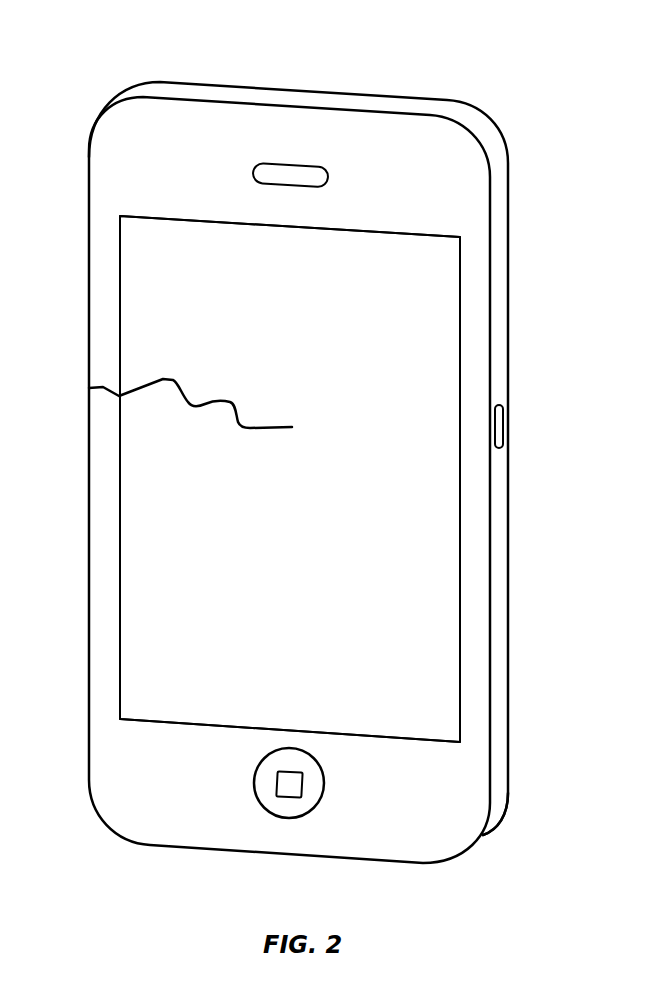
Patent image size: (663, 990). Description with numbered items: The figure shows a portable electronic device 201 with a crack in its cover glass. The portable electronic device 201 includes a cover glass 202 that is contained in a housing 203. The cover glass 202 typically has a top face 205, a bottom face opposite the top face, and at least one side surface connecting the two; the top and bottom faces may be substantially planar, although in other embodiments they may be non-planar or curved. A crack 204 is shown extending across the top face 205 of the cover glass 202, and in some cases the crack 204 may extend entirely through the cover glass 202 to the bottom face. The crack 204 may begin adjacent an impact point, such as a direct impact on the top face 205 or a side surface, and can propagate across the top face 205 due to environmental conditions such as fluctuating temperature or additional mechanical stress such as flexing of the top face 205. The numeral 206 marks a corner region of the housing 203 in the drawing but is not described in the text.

The portable electronic device 201 is at (325, 66).
The cover glass 202 is at (438, 548).
The housing 203 is at (498, 580).
The crack 204 is at (163, 378).
The top face 205 is at (435, 685).
The housing corner 206 is at (483, 835).